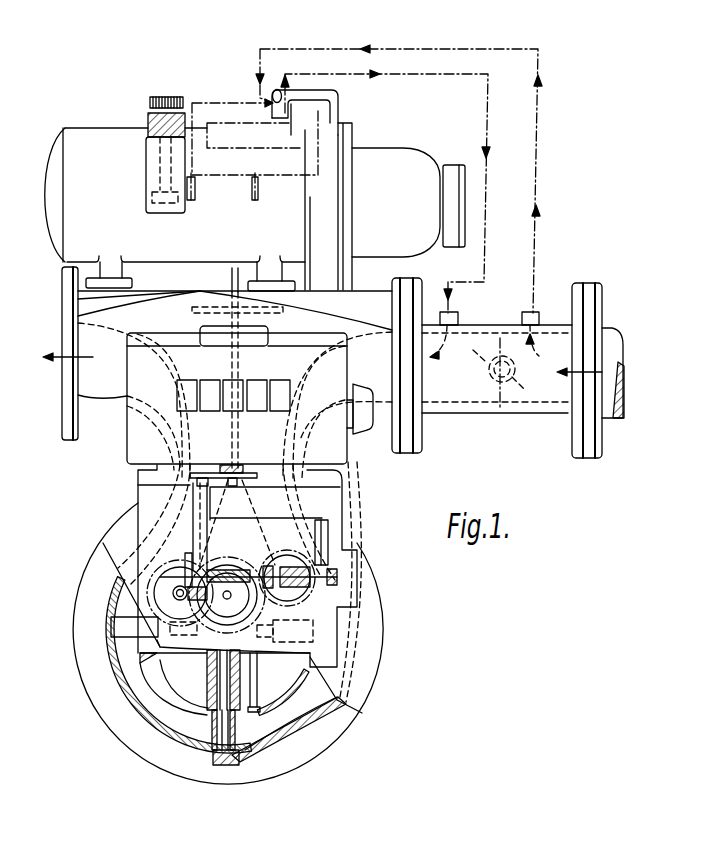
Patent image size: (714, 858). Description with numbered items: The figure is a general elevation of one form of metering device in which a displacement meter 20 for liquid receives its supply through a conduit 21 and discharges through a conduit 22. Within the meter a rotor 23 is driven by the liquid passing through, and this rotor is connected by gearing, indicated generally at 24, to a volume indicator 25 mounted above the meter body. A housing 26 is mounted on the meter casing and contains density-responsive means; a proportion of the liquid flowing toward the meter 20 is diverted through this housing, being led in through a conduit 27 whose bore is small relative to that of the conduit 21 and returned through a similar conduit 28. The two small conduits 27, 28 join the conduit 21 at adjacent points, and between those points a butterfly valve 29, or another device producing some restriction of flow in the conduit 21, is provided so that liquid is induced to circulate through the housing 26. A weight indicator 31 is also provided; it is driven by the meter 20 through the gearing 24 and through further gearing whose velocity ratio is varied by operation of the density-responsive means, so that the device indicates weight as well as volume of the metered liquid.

The displacement meter 20 is at (386, 624).
The conduit 21 is at (554, 413).
The conduit 22 is at (105, 395).
The rotor 23 is at (168, 695).
The gearing 24 is at (184, 497).
The volume indicator 25 is at (133, 453).
The housing 26 is at (115, 137).
The conduit 27 is at (536, 256).
The conduit 28 is at (486, 256).
The butterfly valve 29 is at (501, 410).
The weight indicator 31 is at (235, 104).